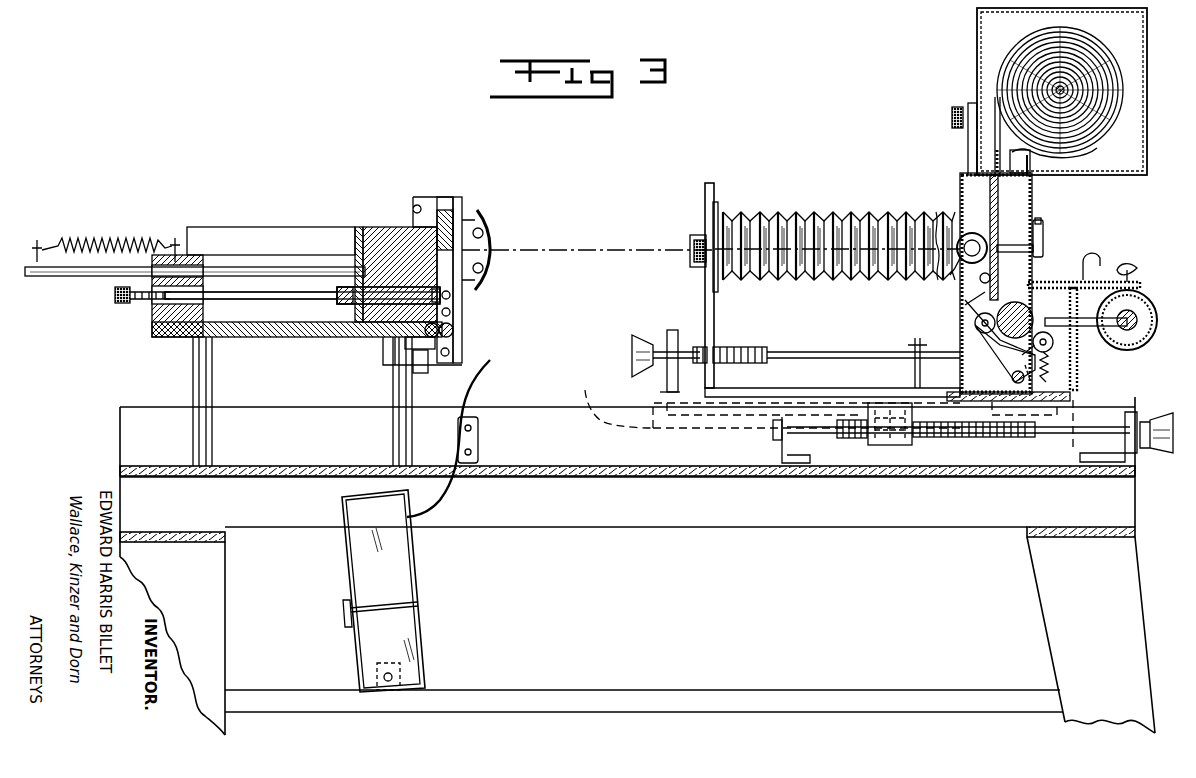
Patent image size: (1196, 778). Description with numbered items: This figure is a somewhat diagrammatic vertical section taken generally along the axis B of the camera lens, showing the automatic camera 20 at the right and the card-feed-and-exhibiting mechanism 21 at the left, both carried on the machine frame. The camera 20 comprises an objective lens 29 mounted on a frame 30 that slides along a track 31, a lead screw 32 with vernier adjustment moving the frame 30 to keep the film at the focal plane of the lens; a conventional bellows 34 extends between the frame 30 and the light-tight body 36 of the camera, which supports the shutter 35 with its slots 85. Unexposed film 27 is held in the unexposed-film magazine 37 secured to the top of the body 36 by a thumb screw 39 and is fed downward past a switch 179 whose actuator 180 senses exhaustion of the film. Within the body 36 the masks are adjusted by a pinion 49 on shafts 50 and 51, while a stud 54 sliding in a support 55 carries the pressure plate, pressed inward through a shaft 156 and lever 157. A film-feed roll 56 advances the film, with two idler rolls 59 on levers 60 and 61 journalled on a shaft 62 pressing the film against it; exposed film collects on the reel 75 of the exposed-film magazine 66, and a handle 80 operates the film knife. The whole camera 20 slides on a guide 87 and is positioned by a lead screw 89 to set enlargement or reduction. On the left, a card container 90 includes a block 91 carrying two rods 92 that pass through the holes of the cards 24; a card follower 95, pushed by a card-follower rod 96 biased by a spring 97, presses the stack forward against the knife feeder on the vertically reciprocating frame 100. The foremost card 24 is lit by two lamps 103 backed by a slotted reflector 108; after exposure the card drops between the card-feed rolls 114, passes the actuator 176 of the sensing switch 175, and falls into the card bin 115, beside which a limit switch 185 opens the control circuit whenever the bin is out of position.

The automatic camera 20 is at (839, 217).
The card-feed mechanism 21 is at (384, 214).
The card 24 is at (358, 228).
The film 27 is at (995, 140).
The objective lens 29 is at (690, 240).
The frame 30 is at (714, 332).
The track 31 is at (885, 388).
The lead screw 32 is at (762, 338).
The bellows 34 is at (792, 212).
The shutter 35 is at (962, 225).
The body of the camera 36 is at (946, 190).
The unexposed-film magazine 37 is at (1133, 138).
The thumb screw 39 is at (952, 118).
The pinion 49 is at (978, 295).
The shaft 50 is at (978, 232).
The shaft 51 is at (979, 273).
The stud 54 is at (1018, 253).
The support 55 is at (1000, 228).
The film-feed roll 56 is at (1024, 314).
The idler rolls 59 is at (978, 328).
The crank or lever 60 is at (966, 304).
The crank or lever 61 is at (1058, 380).
The shaft 62 is at (1012, 380).
The exposed-film magazine 66 is at (1156, 312).
The film reel 75 is at (1132, 330).
The handle 80 is at (1090, 254).
The slots 85 is at (950, 278).
The guide 87 is at (829, 410).
The lead screw 89 is at (963, 440).
The card container 90 is at (232, 232).
The block 91 is at (152, 312).
The rods 92 is at (255, 303).
The card follower 95 is at (357, 250).
The card-follower rod 96 is at (260, 270).
The spring 97 is at (95, 238).
The frame 100 is at (462, 212).
The lamps 103 is at (490, 232).
The reflector 108 is at (491, 252).
The card-feed rolls 114 is at (454, 336).
The card bin 115 is at (342, 578).
The shaft 156 is at (1041, 222).
The lever 157 is at (1043, 254).
The sensing switch 175 is at (418, 373).
The actuator 176 is at (462, 350).
The switch 179 is at (1028, 175).
The actuator 180 is at (1086, 155).
The limit switch 185 is at (400, 677).
The optical axis B is at (558, 250).